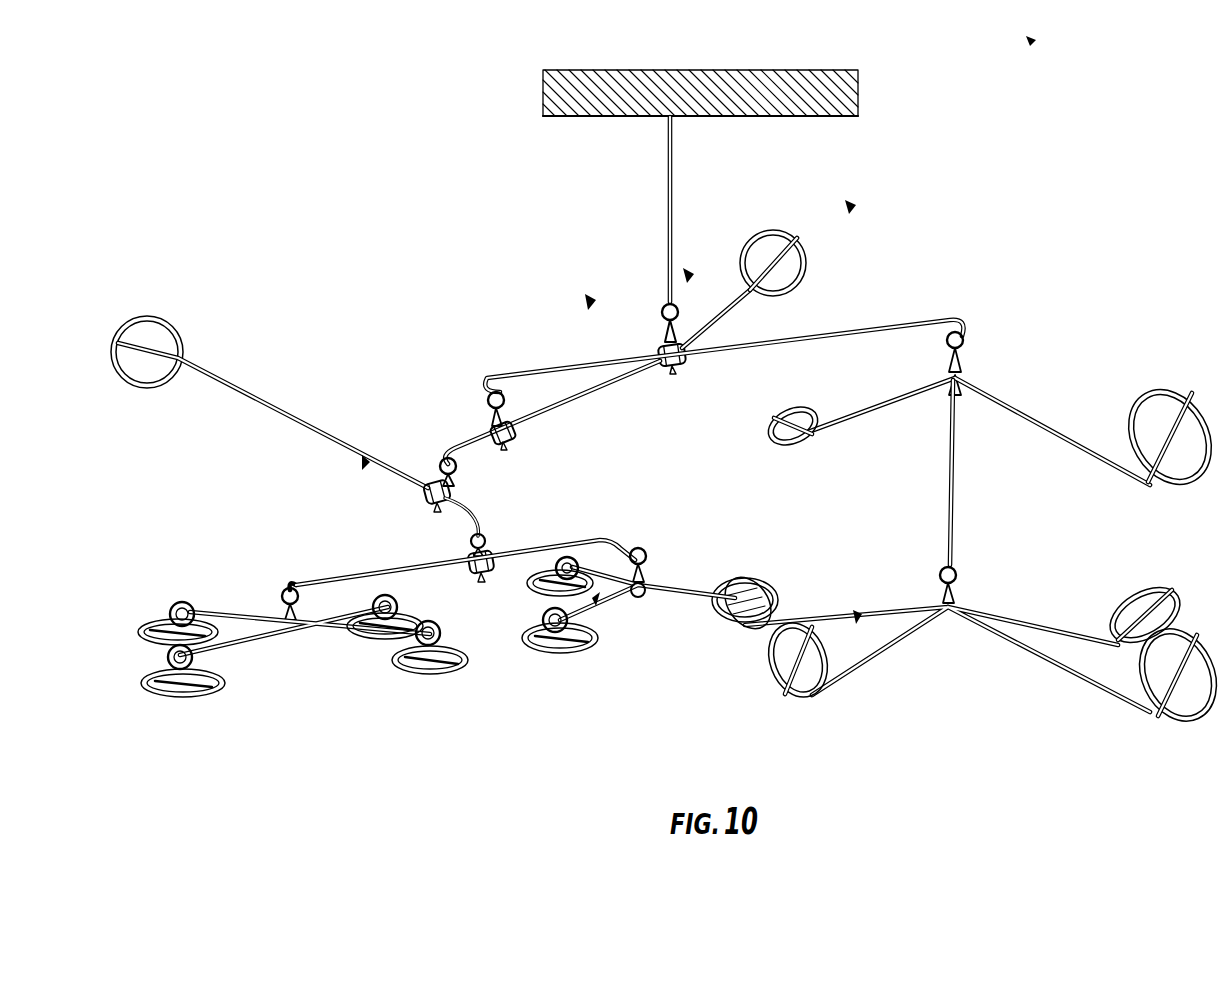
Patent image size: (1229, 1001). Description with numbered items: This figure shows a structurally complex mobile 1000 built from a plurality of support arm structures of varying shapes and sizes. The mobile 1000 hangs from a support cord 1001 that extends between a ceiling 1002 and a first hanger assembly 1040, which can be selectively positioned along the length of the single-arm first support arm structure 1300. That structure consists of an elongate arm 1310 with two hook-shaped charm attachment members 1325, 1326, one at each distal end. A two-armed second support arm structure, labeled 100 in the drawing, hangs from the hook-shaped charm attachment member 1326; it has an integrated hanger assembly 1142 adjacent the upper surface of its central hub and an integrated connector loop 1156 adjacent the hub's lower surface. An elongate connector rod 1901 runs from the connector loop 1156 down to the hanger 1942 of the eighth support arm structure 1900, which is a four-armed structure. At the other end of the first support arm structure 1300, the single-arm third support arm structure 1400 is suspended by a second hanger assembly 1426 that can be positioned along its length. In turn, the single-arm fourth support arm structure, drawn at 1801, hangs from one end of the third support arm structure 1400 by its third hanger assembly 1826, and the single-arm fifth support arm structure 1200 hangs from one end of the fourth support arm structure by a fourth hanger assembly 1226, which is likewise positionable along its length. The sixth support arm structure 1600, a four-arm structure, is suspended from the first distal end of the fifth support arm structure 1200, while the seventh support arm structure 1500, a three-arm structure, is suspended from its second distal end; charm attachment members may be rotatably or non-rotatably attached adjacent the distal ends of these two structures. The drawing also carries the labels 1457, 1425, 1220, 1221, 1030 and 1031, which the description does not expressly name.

The mobile 1000 is at (1027, 150).
The ceiling 1002 is at (730, 118).
The support cord 1001 is at (672, 232).
The ring weight 1457 is at (797, 245).
The first support arm structure 1300 is at (770, 339).
The elongate arm 1310 is at (820, 338).
The hook-shaped charm attachment member 1325 is at (492, 382).
The hook-shaped charm attachment member 1326 is at (965, 316).
The integrated hanger assembly 1142 is at (968, 356).
The sub-mobile 100 is at (995, 422).
The integrated connector loop 1156 is at (945, 388).
The first hanger assembly 1040 is at (680, 380).
The third support arm structure 1400 is at (531, 433).
The second hanger assembly 1426 is at (508, 447).
The hook 1425 is at (450, 455).
The arm with ring 1801 is at (268, 404).
The third hanger assembly 1826 is at (436, 507).
The elongate connector rod 1901 is at (955, 470).
The eighth support arm structure 1900 is at (970, 655).
The hanger 1942 is at (965, 590).
The fifth support arm structure 1200 is at (489, 609).
The fourth hanger assembly 1226 is at (487, 576).
The hook 1220 is at (283, 592).
The hook 1221 is at (650, 542).
The sixth support arm structure 1600 is at (298, 688).
The disc 1030 is at (180, 695).
The seventh support arm structure 1500 is at (623, 673).
The disc 1031 is at (555, 654).